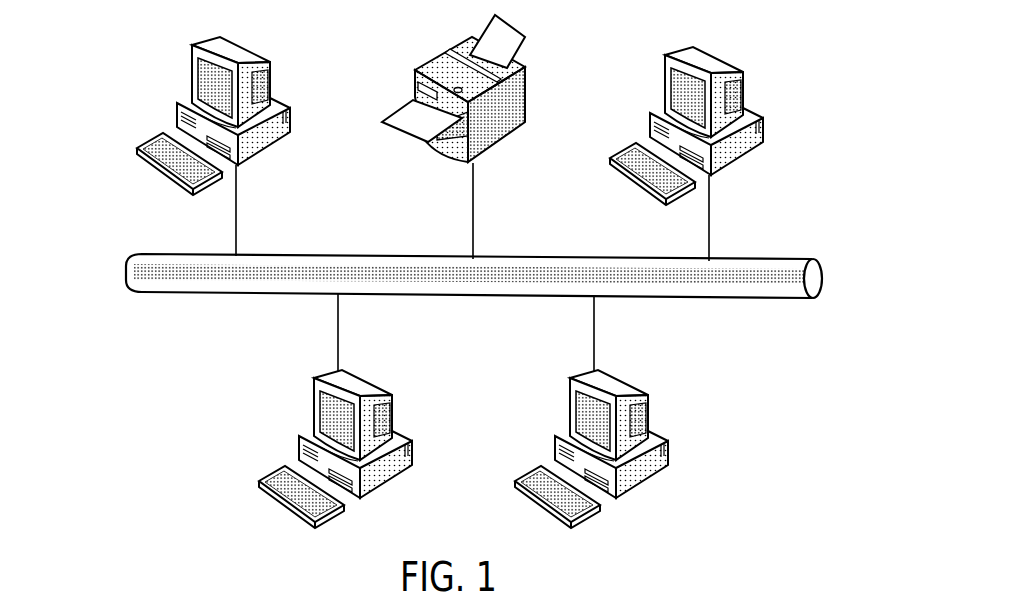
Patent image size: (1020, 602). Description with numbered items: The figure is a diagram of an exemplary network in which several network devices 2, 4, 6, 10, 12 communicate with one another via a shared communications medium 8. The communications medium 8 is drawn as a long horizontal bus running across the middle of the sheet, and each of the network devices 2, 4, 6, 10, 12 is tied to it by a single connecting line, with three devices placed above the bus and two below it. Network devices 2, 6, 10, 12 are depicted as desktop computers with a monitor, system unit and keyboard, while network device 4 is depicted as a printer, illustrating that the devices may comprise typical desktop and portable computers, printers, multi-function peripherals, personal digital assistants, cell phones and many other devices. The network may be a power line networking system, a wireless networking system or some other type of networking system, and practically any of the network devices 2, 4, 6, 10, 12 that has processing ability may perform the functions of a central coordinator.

The network device 2 is at (178, 120).
The network device 4 is at (433, 63).
The network device 6 is at (763, 128).
The communications medium 8 is at (128, 274).
The network device 10 is at (300, 452).
The network device 12 is at (667, 456).